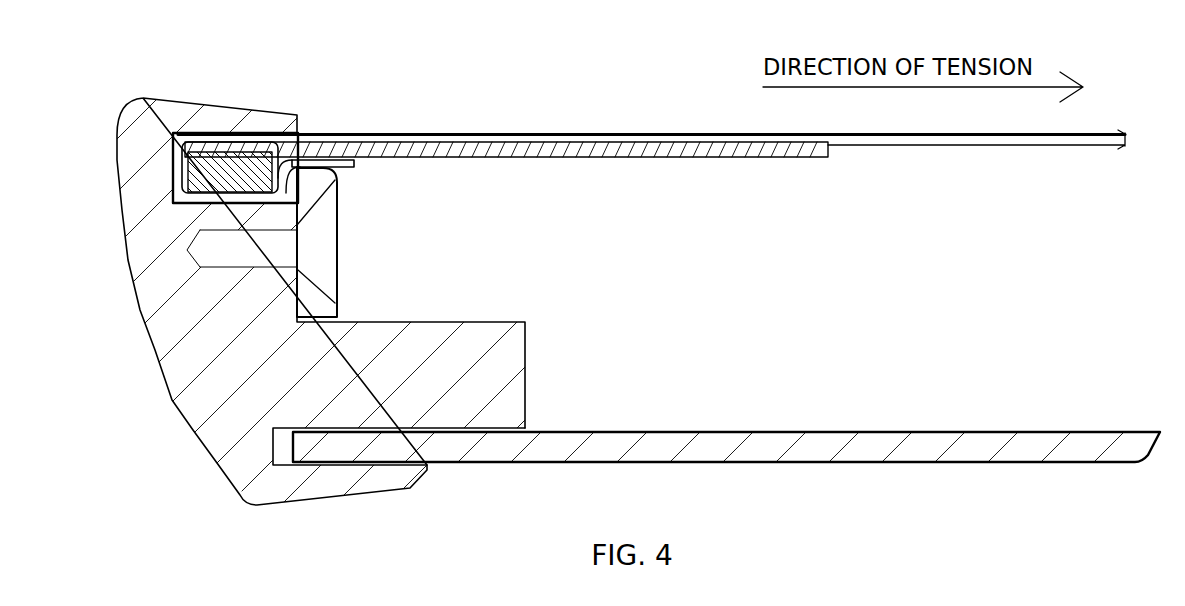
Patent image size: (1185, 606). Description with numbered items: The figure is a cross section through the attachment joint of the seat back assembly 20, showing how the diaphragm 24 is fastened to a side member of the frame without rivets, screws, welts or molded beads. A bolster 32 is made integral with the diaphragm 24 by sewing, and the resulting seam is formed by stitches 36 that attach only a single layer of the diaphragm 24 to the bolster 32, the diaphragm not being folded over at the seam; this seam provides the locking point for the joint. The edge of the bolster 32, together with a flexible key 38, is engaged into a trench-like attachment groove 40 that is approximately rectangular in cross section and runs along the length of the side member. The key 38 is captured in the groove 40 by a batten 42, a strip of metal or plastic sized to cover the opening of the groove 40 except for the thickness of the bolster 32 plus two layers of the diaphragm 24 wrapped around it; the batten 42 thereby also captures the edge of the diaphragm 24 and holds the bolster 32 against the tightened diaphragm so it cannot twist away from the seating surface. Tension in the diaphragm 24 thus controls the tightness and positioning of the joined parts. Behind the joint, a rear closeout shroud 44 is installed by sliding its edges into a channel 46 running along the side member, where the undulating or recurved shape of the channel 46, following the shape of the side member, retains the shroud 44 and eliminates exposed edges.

The seat back assembly 20 is at (248, 133).
The diaphragm 24 is at (502, 134).
The bolster 32 is at (598, 158).
The stitches 36 is at (295, 145).
The flexible key 38 is at (183, 180).
The attachment groove 40 is at (172, 132).
The batten 42 is at (337, 237).
The rear closeout shroud 44 is at (730, 430).
The channel 46 is at (273, 430).